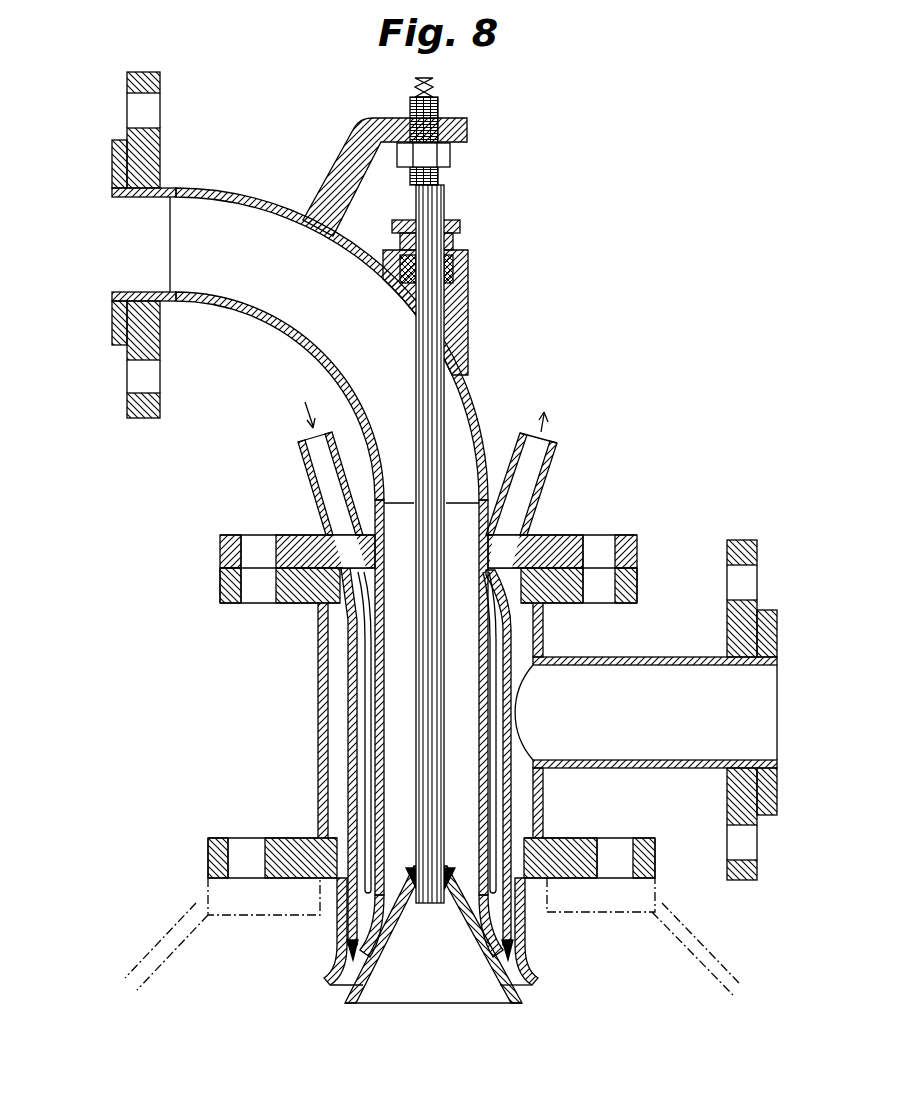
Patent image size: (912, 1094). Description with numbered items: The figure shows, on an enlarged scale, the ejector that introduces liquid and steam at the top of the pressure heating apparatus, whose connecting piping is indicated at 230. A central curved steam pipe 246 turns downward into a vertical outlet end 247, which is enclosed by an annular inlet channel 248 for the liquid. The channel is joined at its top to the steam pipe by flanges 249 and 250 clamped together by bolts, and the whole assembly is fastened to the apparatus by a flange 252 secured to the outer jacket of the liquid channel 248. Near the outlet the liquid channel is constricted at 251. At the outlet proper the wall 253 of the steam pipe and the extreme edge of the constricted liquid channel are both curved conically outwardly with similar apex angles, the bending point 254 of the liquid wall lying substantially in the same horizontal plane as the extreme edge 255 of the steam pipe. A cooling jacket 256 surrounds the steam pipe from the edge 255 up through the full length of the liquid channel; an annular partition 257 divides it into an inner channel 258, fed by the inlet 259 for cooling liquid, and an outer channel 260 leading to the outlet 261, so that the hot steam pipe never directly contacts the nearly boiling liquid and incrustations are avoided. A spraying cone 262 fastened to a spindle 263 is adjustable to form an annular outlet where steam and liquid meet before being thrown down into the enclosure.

The pipe 230 is at (700, 950).
The steam pipe 246 is at (273, 332).
The vertical outlet end 247 is at (375, 676).
The annular inlet channel 248 is at (338, 708).
The flange 249 is at (235, 604).
The flange 250 is at (234, 535).
The constriction 251 is at (355, 920).
The flange 252 is at (221, 838).
The wall of the steam pipe 253 is at (373, 928).
The bending point 254 is at (530, 960).
The extreme edge 255 is at (343, 960).
The cooling jacket 256 is at (353, 747).
The annular partition 257 is at (496, 741).
The inner channel 258 is at (488, 706).
The inlet 259 is at (303, 465).
The outer channel 260 is at (500, 633).
The outlet 261 is at (543, 486).
The spraying cone 262 is at (491, 962).
The spindle 263 is at (432, 388).